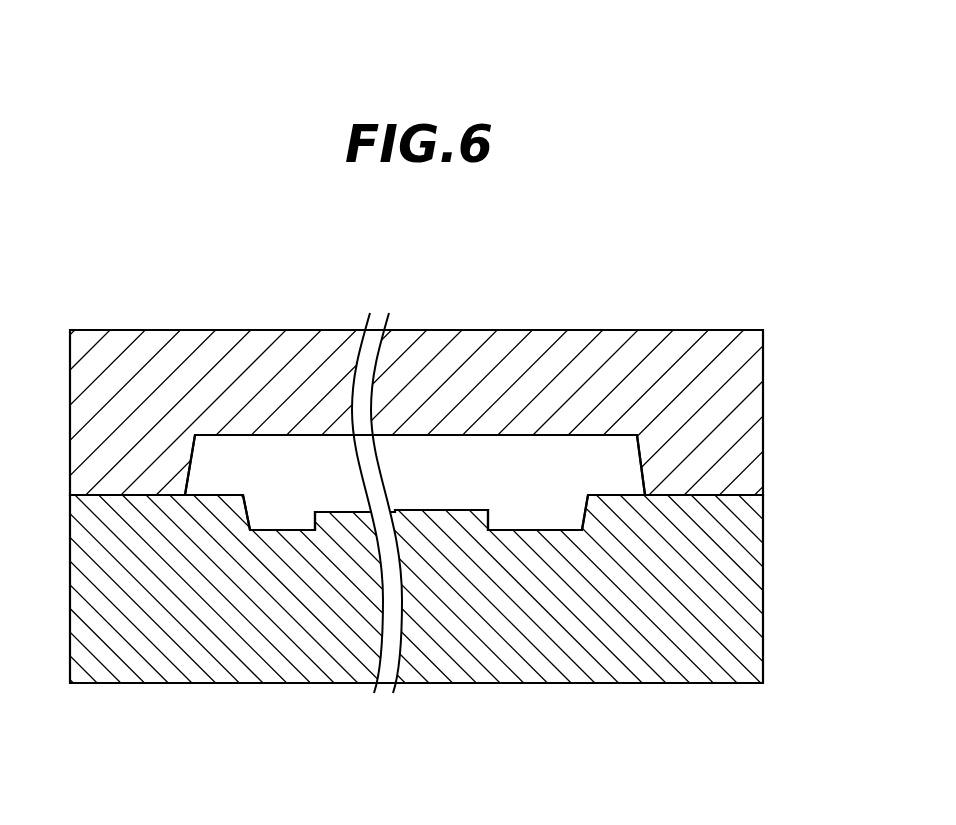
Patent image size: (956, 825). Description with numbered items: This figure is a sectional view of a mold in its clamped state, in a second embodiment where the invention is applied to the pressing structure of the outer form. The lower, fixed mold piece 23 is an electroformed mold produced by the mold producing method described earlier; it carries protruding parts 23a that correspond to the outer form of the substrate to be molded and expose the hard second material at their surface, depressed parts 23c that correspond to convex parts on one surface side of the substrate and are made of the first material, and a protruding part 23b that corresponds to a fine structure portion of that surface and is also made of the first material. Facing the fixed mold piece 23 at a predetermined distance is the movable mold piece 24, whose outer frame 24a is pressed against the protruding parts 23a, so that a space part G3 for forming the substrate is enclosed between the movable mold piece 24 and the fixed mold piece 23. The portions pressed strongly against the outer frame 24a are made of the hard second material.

The movable mold piece 24 is at (593, 358).
The outer frame 24a is at (723, 467).
The fixed mold piece 23 is at (492, 656).
The protruding parts 23a is at (600, 510).
The protruding part 23b is at (353, 513).
The depressed parts 23c is at (558, 531).
The space part G3 is at (283, 470).